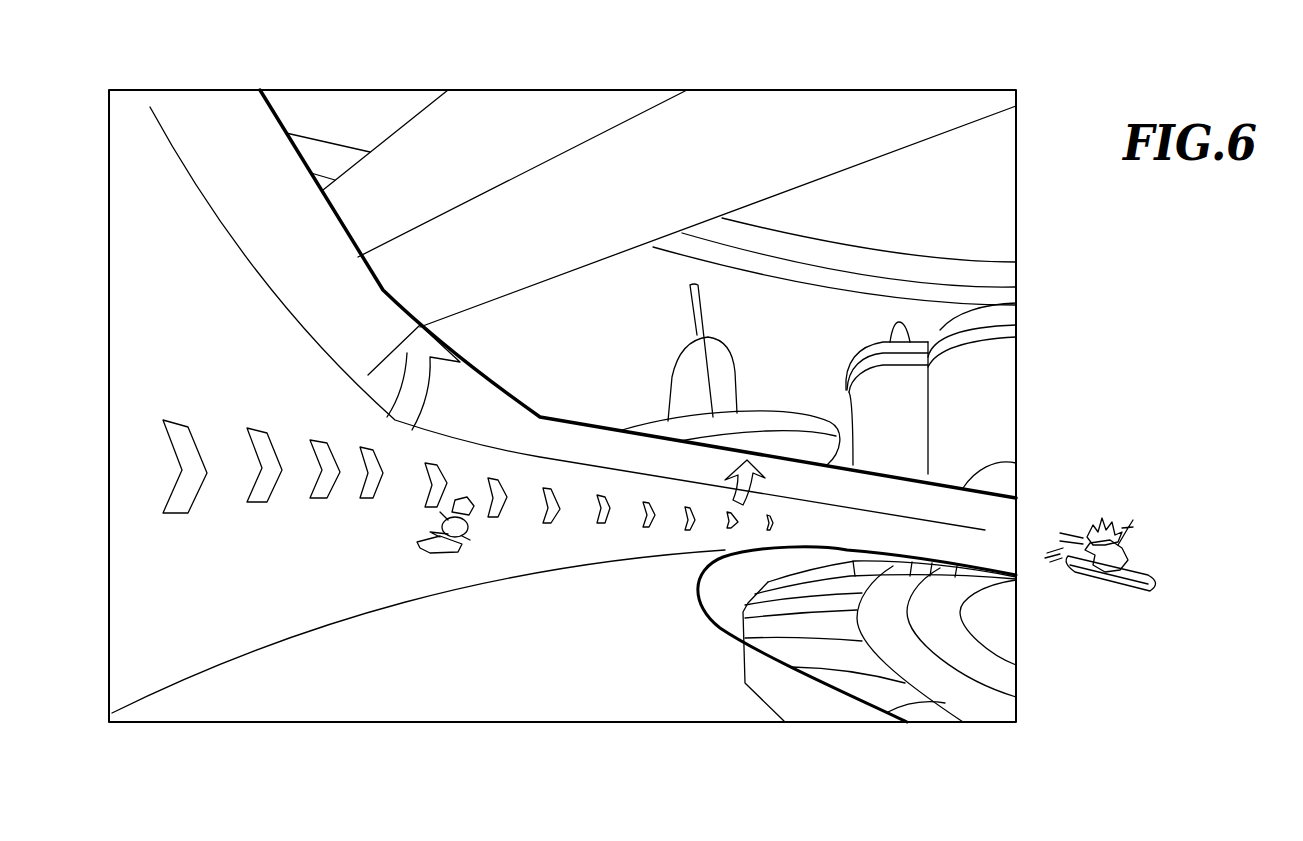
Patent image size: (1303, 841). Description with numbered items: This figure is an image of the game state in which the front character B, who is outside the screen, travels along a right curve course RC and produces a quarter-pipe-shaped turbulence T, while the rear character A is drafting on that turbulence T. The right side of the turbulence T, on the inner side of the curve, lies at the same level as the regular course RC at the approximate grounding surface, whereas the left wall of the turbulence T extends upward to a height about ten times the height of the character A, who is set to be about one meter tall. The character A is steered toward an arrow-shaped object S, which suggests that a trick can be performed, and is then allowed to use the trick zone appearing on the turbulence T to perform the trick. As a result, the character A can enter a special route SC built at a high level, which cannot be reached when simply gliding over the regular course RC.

The turbulence T is at (205, 140).
The special route SC is at (450, 170).
The arrow-shaped object S is at (1016, 463).
The rear character A is at (460, 556).
The front character B is at (1117, 590).
The right curve course RC is at (813, 702).